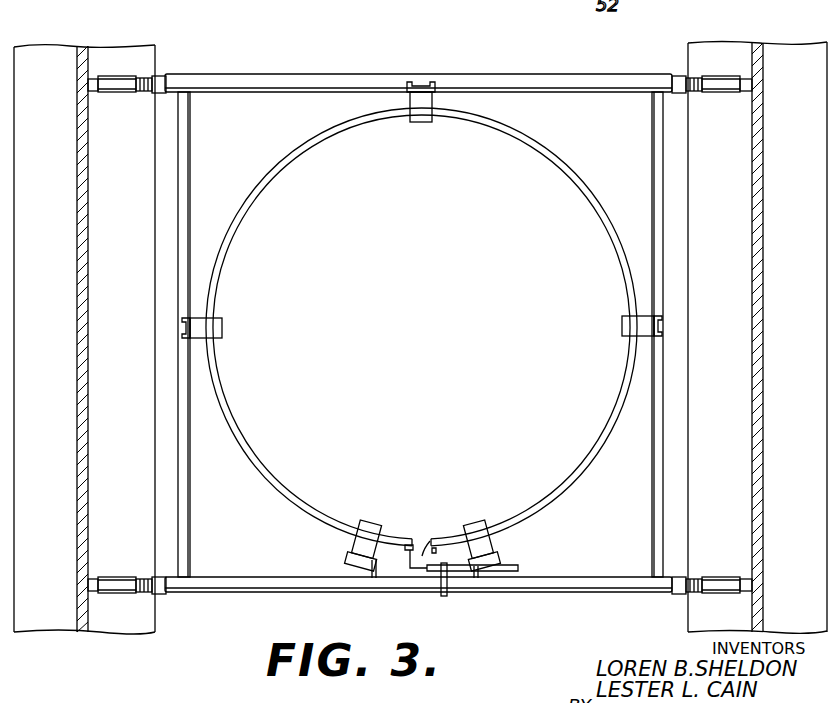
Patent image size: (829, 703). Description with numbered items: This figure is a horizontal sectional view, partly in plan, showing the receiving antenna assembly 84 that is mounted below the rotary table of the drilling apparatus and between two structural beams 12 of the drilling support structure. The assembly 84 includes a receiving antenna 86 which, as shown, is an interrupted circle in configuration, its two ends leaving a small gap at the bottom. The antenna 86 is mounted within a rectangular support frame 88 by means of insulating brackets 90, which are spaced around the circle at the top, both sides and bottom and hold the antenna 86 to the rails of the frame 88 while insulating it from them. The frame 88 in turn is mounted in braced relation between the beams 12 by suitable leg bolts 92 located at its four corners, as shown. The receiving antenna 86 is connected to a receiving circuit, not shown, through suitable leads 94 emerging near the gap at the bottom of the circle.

The structural beams 12 is at (90, 287).
The receiving antenna assembly 84 is at (287, 74).
The rectangular support frame 88 is at (519, 74).
The receiving antenna 86 is at (556, 158).
The insulating brackets 90 is at (424, 122).
The leg bolts 92 is at (108, 92).
The leads 94 is at (428, 552).